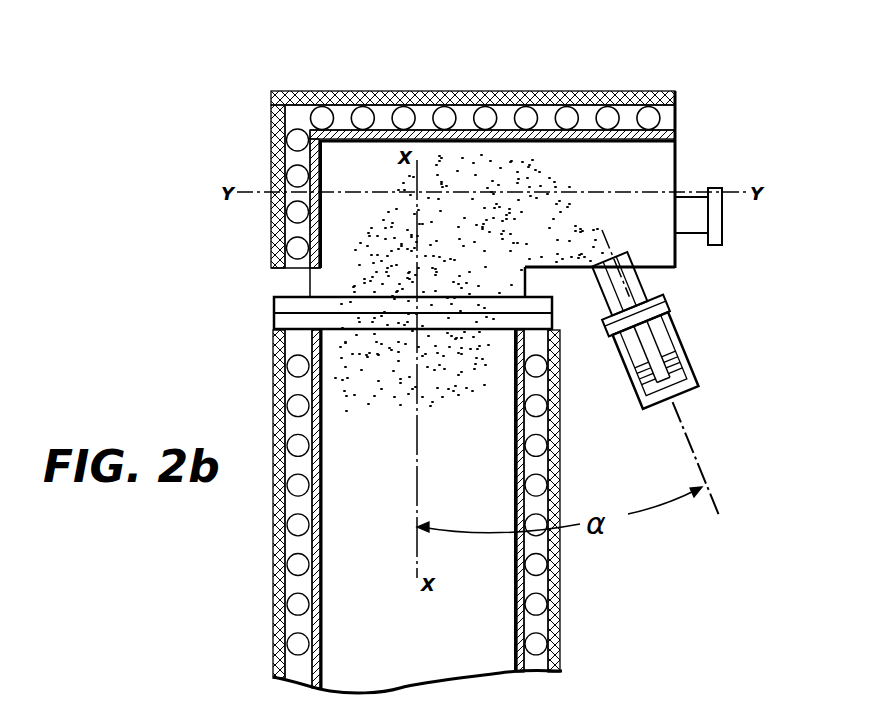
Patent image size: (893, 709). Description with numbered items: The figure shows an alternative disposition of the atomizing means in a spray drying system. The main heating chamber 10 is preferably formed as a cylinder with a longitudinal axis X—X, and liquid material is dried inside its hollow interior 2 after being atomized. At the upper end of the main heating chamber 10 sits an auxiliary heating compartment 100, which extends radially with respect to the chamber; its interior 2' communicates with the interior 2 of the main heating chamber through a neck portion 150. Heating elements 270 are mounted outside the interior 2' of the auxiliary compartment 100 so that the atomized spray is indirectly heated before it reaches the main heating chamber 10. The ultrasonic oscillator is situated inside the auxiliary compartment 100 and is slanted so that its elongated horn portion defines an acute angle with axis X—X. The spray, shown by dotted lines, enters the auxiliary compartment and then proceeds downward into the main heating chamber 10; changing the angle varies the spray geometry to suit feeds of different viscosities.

The auxiliary heating compartment 100 is at (688, 154).
The heating elements 270 is at (528, 118).
The interior of the auxiliary heating compartment 2' is at (469, 237).
The neck portion 150 is at (312, 273).
The main heating chamber 10 is at (239, 555).
The hollow interior of the main heating chamber 2 is at (418, 500).